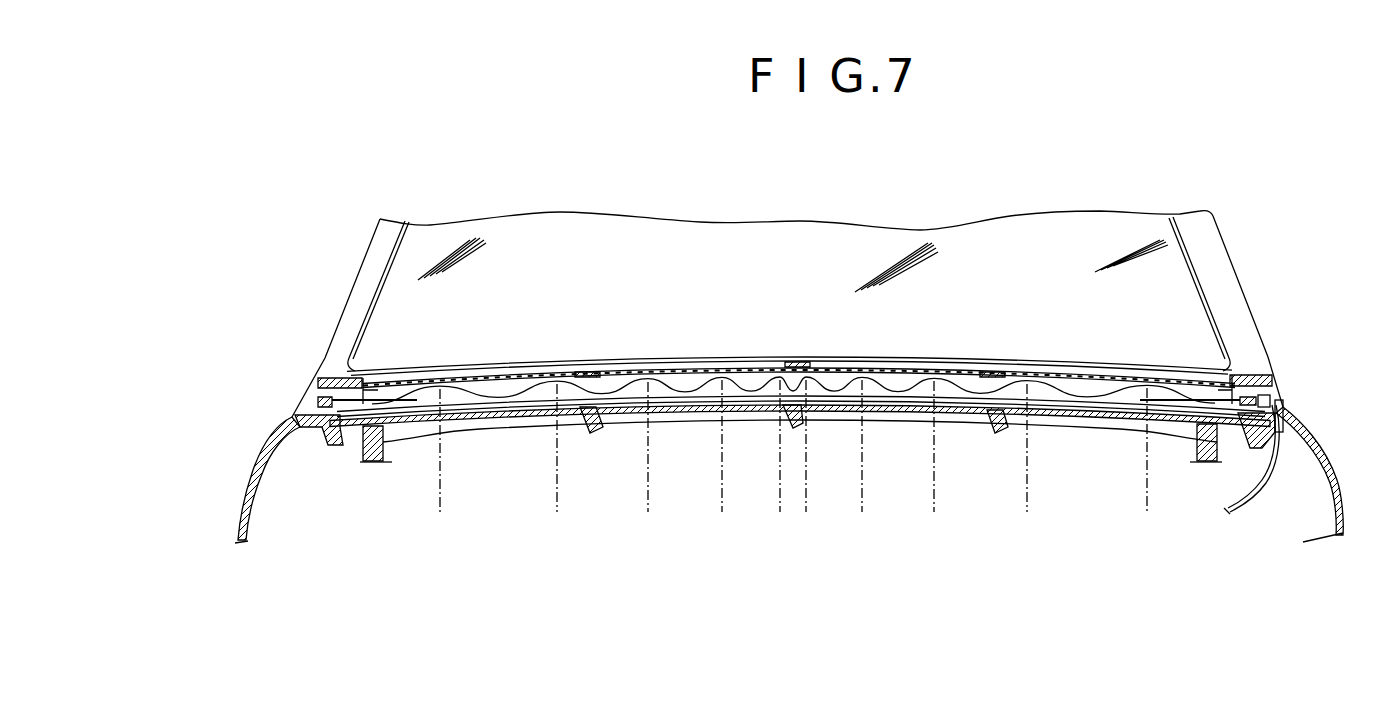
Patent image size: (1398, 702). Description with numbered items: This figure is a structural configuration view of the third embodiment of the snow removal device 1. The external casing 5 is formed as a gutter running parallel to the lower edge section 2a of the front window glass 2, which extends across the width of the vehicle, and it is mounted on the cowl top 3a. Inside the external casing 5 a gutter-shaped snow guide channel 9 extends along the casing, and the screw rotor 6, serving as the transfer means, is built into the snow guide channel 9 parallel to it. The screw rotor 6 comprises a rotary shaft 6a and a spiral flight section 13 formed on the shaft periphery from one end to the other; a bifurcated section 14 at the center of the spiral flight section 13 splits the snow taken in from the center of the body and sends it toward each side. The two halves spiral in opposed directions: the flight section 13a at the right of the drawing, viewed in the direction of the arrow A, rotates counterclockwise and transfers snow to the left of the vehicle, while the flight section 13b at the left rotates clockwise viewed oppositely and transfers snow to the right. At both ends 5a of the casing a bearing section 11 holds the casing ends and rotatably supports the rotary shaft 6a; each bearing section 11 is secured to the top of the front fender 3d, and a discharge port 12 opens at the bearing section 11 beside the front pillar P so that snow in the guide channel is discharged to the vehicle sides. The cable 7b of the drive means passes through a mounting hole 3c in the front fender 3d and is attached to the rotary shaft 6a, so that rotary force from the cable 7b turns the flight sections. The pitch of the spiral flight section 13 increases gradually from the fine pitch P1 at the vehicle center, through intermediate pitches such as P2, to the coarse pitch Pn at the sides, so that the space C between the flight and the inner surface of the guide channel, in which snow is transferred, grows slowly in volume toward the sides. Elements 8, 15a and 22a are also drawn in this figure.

The snow removal device 1 is at (929, 353).
The front window glass 2 is at (793, 238).
The lower edge section 2a is at (573, 358).
The cowl top 3a is at (487, 417).
The mounting hole 3c is at (1280, 437).
The front fender 3d is at (262, 457).
The external casing 5 is at (366, 375).
The ends of the casing 5a is at (1242, 366).
The screw rotor 6 is at (898, 383).
The rotary shaft 6a is at (660, 383).
The cable 7b is at (1258, 494).
The fastener 8 is at (793, 395).
The snow guide channel 9 is at (718, 380).
The bearing section 11 is at (332, 376).
The snow discharge port 12 is at (312, 404).
The spiral flight section 13 is at (728, 253).
The right side flight section 13a is at (833, 387).
The left side flight section 13b is at (752, 386).
The bifurcated section 14 is at (770, 378).
The plate lower surface 15a is at (635, 420).
The bottom plate edge 22a is at (572, 424).
The front pillar P is at (368, 272).
The space C is at (517, 390).
The arrow A is at (1334, 407).
The pitch at the sides Pn is at (441, 500).
The pitch at the center P1 is at (723, 500).
The pitch 2 P2 is at (649, 500).